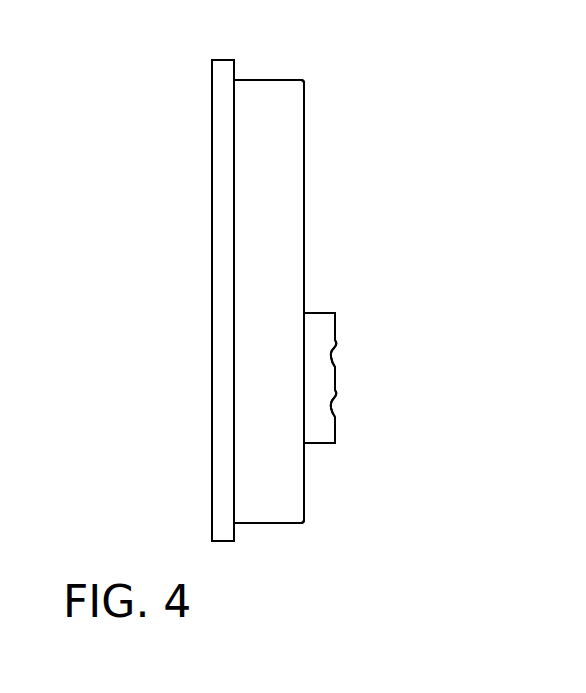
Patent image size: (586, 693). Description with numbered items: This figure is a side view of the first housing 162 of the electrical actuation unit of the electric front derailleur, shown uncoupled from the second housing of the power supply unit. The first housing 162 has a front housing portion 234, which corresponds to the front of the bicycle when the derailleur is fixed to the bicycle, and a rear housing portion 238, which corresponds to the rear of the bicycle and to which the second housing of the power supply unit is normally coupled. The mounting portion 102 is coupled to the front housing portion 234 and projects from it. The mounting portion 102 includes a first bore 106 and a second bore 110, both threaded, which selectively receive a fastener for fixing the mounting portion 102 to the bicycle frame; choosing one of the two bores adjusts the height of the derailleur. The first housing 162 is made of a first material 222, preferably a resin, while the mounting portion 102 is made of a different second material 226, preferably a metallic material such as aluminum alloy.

The rear housing portion 238 is at (211, 155).
The front housing portion 234 is at (304, 150).
The first housing 162 is at (285, 205).
The mounting portion 102 is at (327, 313).
The second material 226 is at (315, 383).
The second bore 110 is at (333, 345).
The bore 106 is at (333, 395).
The first material 222 is at (287, 502).